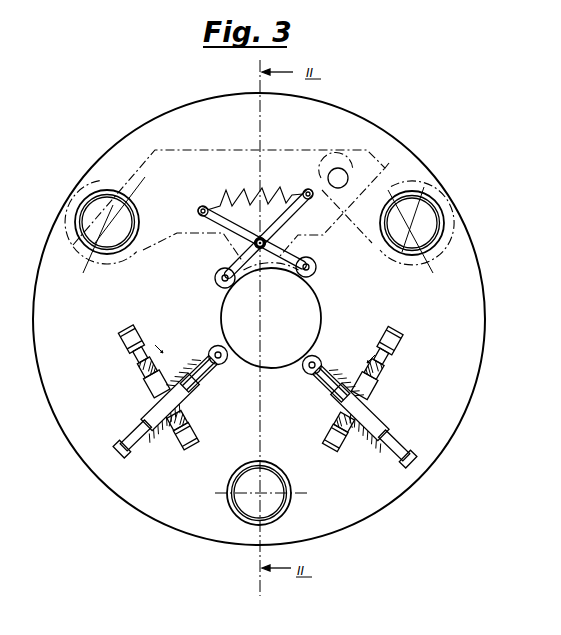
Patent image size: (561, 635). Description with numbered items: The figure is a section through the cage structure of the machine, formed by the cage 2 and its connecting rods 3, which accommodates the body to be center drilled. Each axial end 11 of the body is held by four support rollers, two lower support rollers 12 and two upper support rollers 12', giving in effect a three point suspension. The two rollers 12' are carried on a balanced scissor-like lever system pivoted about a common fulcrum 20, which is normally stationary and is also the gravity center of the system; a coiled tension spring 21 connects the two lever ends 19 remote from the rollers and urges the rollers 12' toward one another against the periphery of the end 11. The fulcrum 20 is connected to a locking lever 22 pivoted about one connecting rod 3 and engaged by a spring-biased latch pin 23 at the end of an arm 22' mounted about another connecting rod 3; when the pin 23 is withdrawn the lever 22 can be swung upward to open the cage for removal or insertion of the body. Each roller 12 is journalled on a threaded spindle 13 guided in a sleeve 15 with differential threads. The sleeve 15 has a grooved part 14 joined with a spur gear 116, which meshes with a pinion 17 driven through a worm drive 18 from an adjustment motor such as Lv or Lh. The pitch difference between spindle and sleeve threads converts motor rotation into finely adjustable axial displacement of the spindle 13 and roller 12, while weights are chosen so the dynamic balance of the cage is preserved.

The cage 2 is at (470, 242).
The connecting rod 3 is at (110, 254).
The axial end of body 11 is at (318, 307).
The support roller 12 is at (271, 352).
The support roller 12' is at (271, 266).
The threaded spindle 13 is at (214, 368).
The grooved part 14 is at (163, 432).
The sleeve 15 is at (197, 392).
The pinion 17 is at (119, 375).
The worm drive 18 is at (163, 355).
The lever end 19 is at (232, 231).
The fulcrum 20 is at (262, 232).
The coiled tension spring 21 is at (254, 196).
The locking lever 22 is at (259, 199).
The arm 22' is at (401, 165).
The latch pin 23 is at (329, 175).
The spur gear 116 is at (140, 390).
The adjustment motor Lv is at (118, 346).
The adjustment motor Lh is at (400, 344).